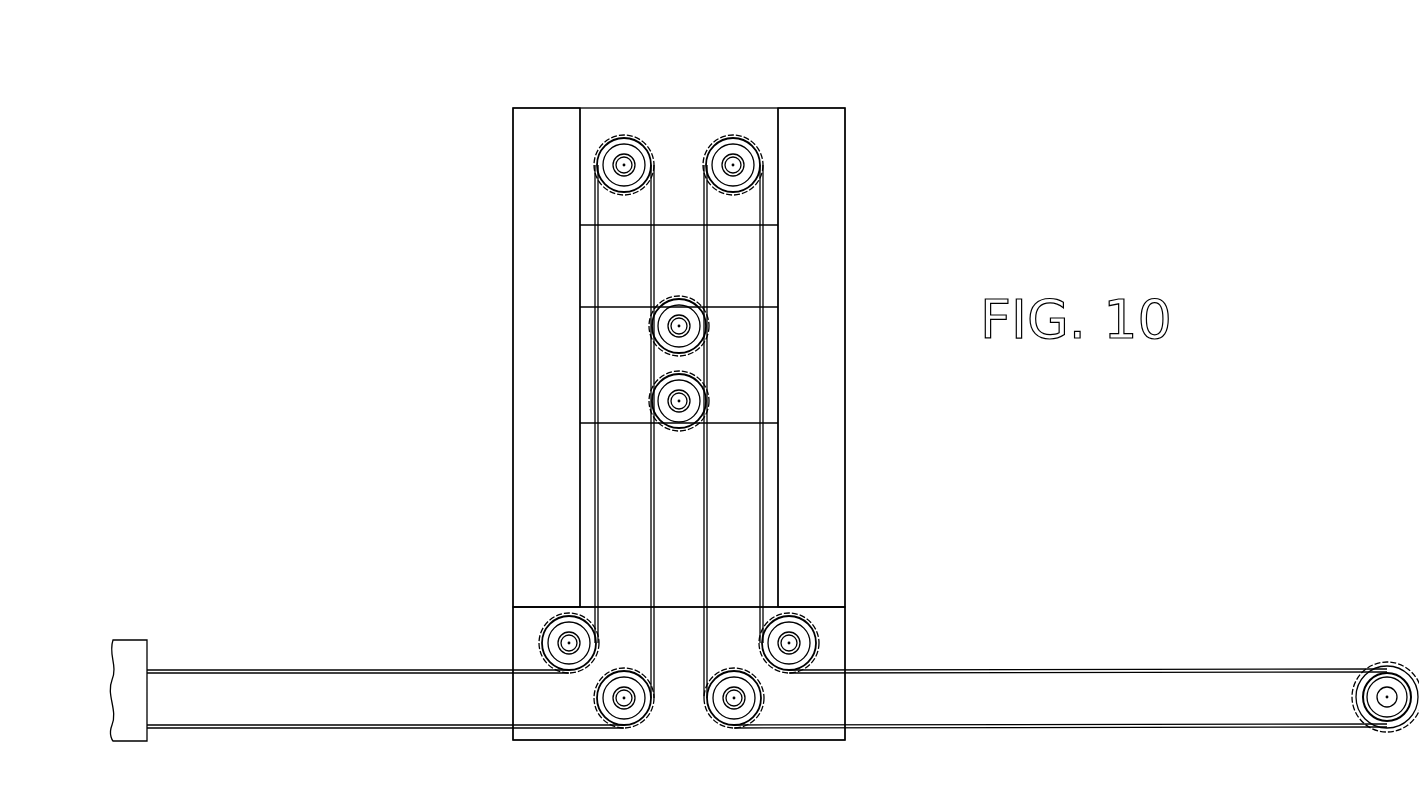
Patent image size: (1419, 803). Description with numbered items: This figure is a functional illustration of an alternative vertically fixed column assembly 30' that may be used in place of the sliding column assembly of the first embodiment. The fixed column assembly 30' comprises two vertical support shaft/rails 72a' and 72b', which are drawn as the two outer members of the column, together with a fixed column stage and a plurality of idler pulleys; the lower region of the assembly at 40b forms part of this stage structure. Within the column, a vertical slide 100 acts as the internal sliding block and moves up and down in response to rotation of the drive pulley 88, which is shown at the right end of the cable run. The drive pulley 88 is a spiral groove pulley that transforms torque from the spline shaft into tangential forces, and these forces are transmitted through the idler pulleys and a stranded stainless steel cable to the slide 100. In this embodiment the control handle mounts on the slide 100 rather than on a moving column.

The vertically fixed column assembly 30' is at (679, 394).
The vertical support shaft/rail 72a' is at (500, 357).
The vertical support shaft/rail 72b' is at (857, 357).
The vertical slide 100 is at (740, 367).
The lower drive housing 40b is at (837, 624).
The drive pulley 88 is at (1378, 661).